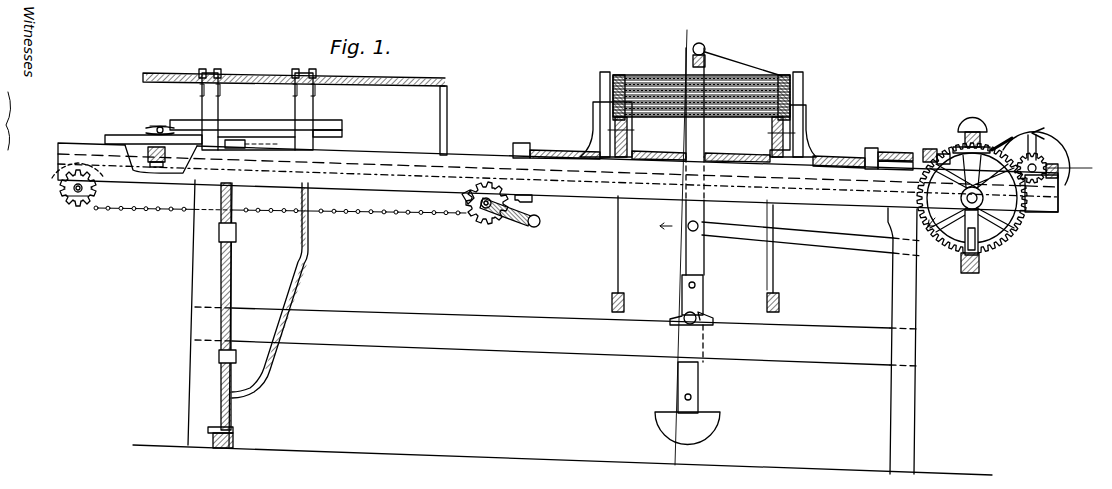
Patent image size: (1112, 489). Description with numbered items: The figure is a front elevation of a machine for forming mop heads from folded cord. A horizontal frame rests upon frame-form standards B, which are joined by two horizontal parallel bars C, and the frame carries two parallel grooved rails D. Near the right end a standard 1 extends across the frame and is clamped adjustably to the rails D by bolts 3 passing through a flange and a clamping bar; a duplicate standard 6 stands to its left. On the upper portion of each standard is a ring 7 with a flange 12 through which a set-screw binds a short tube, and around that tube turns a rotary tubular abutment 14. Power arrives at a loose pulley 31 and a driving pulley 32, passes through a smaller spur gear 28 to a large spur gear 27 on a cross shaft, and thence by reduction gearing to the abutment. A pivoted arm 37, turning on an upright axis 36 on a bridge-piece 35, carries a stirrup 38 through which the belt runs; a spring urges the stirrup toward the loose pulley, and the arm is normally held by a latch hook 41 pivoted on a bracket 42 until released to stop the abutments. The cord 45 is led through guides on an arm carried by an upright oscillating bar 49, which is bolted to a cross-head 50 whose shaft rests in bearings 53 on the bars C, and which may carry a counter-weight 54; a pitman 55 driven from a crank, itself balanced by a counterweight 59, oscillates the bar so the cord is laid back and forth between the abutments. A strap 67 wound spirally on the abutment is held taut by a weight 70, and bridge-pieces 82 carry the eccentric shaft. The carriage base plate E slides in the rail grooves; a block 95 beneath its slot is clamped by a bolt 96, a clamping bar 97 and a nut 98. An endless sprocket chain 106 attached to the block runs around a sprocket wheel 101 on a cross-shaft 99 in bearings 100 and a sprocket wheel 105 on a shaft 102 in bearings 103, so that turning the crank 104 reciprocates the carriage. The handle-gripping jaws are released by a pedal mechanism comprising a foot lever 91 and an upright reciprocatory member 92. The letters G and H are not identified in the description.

The standard 1 is at (808, 120).
The bolt 3 is at (678, 247).
The standard 6 is at (595, 120).
The ring 7 is at (598, 80).
The flange 12 is at (770, 75).
The rotary tubular abutment 14 is at (617, 76).
The spur gear wheel 27 is at (1010, 235).
The spur gear wheel 28 is at (1058, 185).
The loose pulley 31 is at (1047, 166).
The driving pulley 32 is at (1058, 172).
The bridge-piece 35 is at (926, 149).
The upright axis 36 is at (934, 149).
The arm 37 is at (893, 152).
The stirrup 38 is at (1006, 146).
The hook 41 is at (872, 148).
The bracket 42 is at (866, 158).
The cord 45 is at (737, 62).
The oscillating bar 49 is at (704, 258).
The cross-head 50 is at (703, 297).
The bearings 53 is at (673, 315).
The counter-weight 54 is at (718, 436).
The pitman 55 is at (808, 240).
The counterweight 59 is at (968, 118).
The strap 67 is at (615, 258).
The weight 70 is at (611, 303).
The bridge-pieces 82 is at (532, 198).
The foot lever 91 is at (235, 430).
The upright reciprocatory member 92 is at (290, 288).
The block 95 is at (150, 172).
The bolt 96 is at (162, 124).
The clamping bar 97 is at (147, 134).
The nut 98 is at (155, 128).
The cross-shaft 99 is at (70, 203).
The bearings 100 is at (68, 192).
The sprocket wheel 101 is at (84, 206).
The shaft 102 is at (494, 214).
The bearings 103 is at (479, 220).
The crank 104 is at (520, 224).
The sprocket wheel 105 is at (465, 210).
The endless sprocket chain 106 is at (332, 216).
The standards B is at (193, 265).
The horizontal parallel bars C is at (556, 336).
The rails D is at (558, 177).
The base plate E is at (122, 138).
The carriage G is at (256, 109).
The guide rail H is at (413, 80).